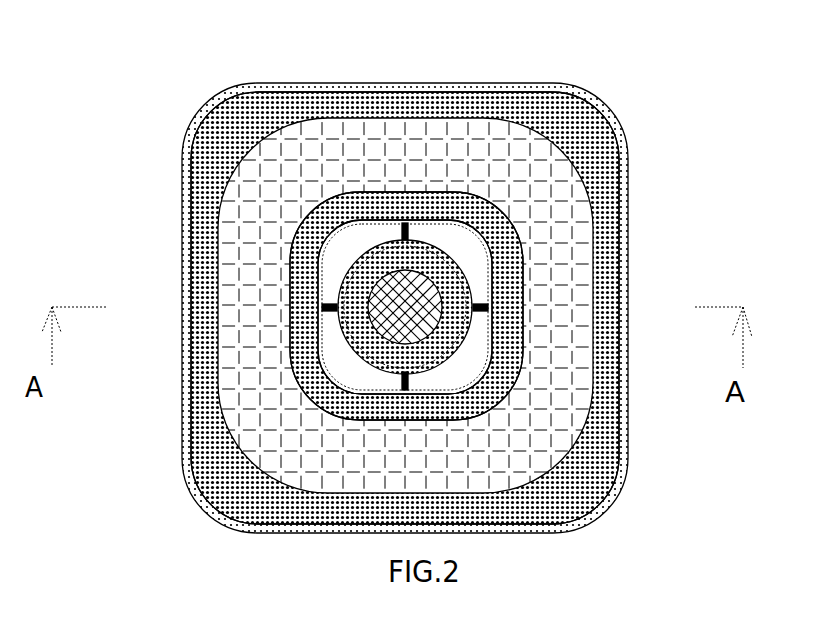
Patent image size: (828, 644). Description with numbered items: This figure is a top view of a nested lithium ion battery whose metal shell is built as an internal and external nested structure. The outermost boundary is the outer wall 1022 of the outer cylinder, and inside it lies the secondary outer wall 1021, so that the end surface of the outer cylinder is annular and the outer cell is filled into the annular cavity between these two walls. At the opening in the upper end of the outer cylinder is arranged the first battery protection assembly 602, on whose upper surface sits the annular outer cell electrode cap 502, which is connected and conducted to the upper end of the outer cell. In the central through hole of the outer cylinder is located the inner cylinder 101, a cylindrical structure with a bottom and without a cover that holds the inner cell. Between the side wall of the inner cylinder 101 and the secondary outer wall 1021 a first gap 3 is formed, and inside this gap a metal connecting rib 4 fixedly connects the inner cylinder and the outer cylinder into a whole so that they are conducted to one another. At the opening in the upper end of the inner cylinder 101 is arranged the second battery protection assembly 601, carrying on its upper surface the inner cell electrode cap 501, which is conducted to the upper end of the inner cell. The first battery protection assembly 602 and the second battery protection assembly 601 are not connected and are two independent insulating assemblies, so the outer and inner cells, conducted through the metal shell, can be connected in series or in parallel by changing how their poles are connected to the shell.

The first battery protection assembly 602 is at (305, 108).
The outer wall 1022 is at (492, 86).
The first gap 3 is at (463, 250).
The outer cell electrode cap 502 is at (558, 267).
The secondary outer wall 1021 is at (490, 320).
The inner cylinder 101 is at (365, 258).
The inner cell electrode cap 501 is at (337, 308).
The second battery protection assembly 601 is at (360, 353).
The metal connecting rib 4 is at (403, 380).